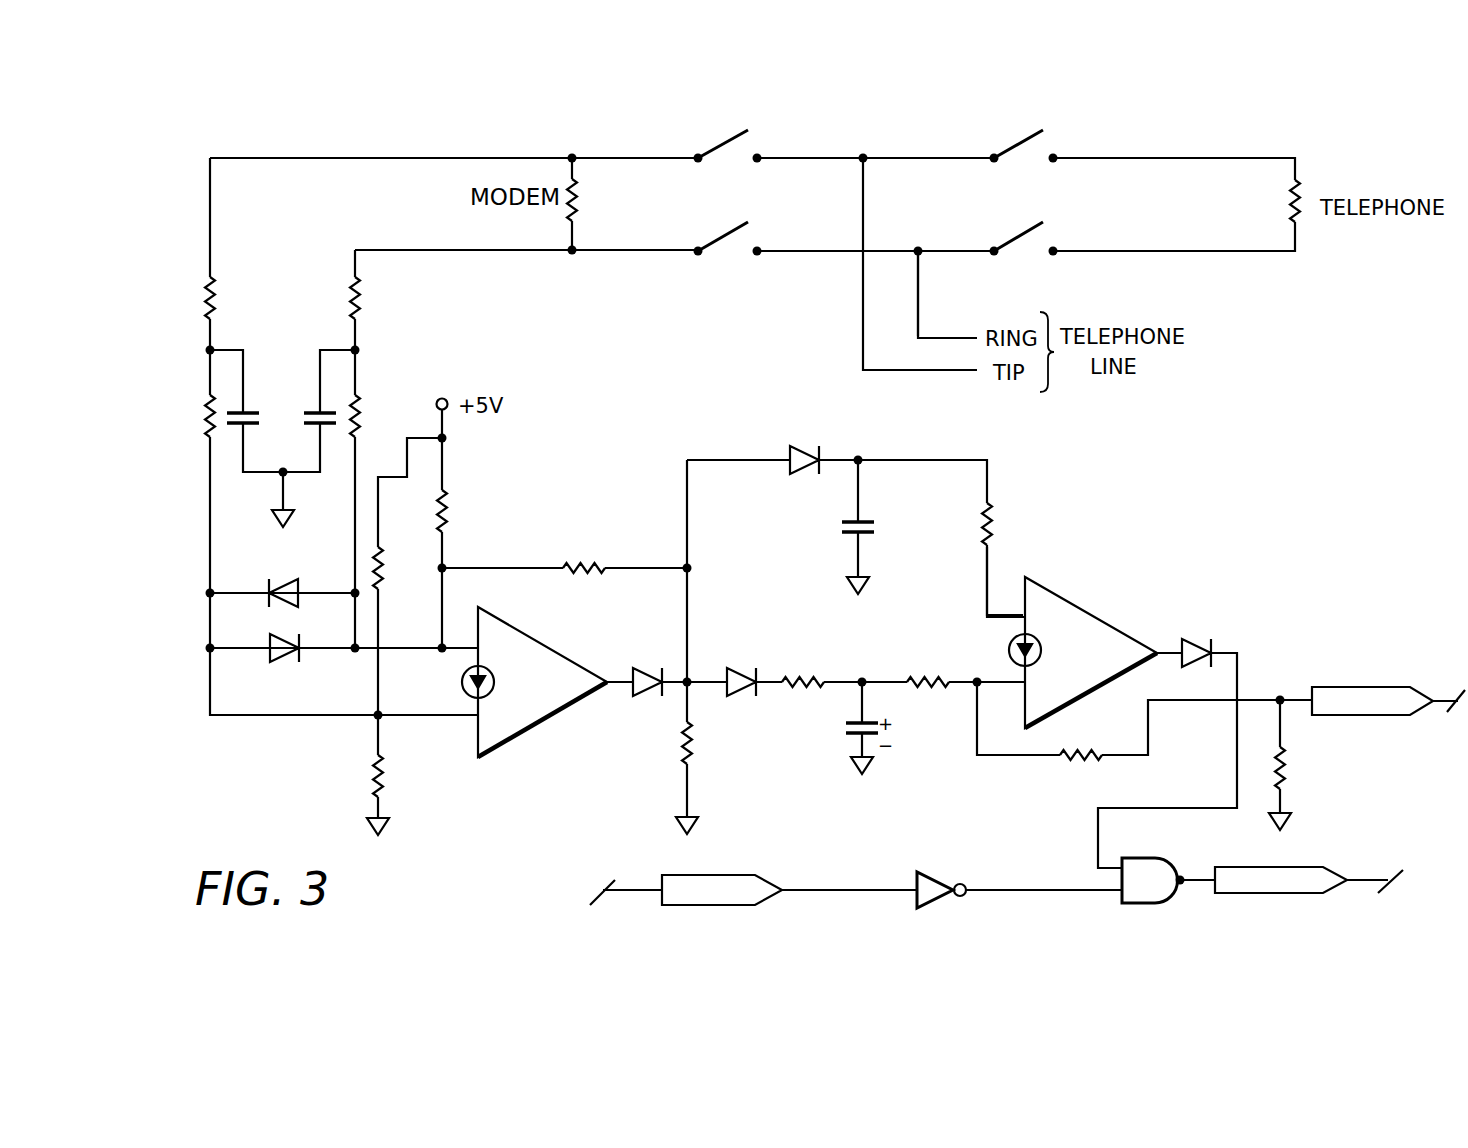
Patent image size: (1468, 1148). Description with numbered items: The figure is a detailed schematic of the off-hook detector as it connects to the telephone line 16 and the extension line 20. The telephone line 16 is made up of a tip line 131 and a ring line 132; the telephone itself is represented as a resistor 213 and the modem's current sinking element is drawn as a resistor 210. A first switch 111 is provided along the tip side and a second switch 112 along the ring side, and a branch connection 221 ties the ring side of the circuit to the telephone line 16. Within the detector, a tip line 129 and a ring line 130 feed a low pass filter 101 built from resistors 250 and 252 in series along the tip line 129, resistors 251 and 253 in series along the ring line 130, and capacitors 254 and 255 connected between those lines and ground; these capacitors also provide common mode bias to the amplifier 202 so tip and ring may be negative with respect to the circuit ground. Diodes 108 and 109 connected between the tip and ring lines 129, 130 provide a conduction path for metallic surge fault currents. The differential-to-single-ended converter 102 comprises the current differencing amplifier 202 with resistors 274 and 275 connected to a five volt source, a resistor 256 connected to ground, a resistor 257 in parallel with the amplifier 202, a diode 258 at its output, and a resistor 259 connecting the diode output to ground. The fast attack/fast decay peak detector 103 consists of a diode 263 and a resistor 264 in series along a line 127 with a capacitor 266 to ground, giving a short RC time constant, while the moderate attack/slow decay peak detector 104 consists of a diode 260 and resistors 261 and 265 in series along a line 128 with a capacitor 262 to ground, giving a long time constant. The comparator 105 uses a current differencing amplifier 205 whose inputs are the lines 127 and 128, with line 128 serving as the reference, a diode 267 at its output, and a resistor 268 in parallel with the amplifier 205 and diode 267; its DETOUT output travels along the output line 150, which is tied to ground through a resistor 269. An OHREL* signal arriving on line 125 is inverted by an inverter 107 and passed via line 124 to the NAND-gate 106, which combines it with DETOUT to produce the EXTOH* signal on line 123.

The extension line 20 is at (1239, 149).
The telephone line 16 is at (1034, 306).
The low pass filter 101 is at (385, 263).
The differential-to-single-ended converter 102 is at (718, 838).
The fast attack/fast decay peak detector 103 is at (1005, 450).
The moderate attack/slow decay peak detector 104 is at (922, 778).
The comparator 105 is at (1250, 545).
The NAND-gate 106 is at (1143, 858).
The inverter 107 is at (958, 860).
The diode 108 is at (289, 583).
The diode 109 is at (277, 662).
The first switch 111 is at (712, 148).
The second switch 112 is at (722, 237).
The line 123 is at (1197, 872).
The line 124 is at (1055, 889).
The OHREL* input signal line 125 is at (860, 889).
The line 127 is at (982, 563).
The line 128 is at (992, 678).
The tip line 129 is at (415, 158).
The ring line 130 is at (415, 250).
The tip line 131 is at (919, 338).
The ring line 132 is at (919, 372).
The output line 150 is at (1295, 695).
The amplifier 202 is at (538, 643).
The amplifier 205 is at (1097, 618).
The resistor 210 is at (578, 192).
The resistor 213 is at (1288, 187).
The ring line connection 221 is at (918, 285).
The resistor 250 is at (206, 292).
The resistor 251 is at (351, 290).
The resistor 252 is at (206, 414).
The resistor 253 is at (348, 440).
The capacitor 254 is at (258, 410).
The capacitor 255 is at (312, 428).
The resistor 256 is at (373, 760).
The resistor 257 is at (580, 560).
The diode 258 is at (643, 668).
The resistor 259 is at (680, 758).
The diode 260 is at (737, 668).
The resistor 261 is at (805, 675).
The capacitor 262 is at (842, 729).
The diode 263 is at (800, 440).
The resistor 264 is at (980, 517).
The resistor 265 is at (912, 673).
The capacitor 266 is at (840, 526).
The diode 267 is at (1194, 640).
The resistor 268 is at (1075, 762).
The resistor 269 is at (1288, 756).
The resistor 274 is at (385, 568).
The resistor 275 is at (448, 498).